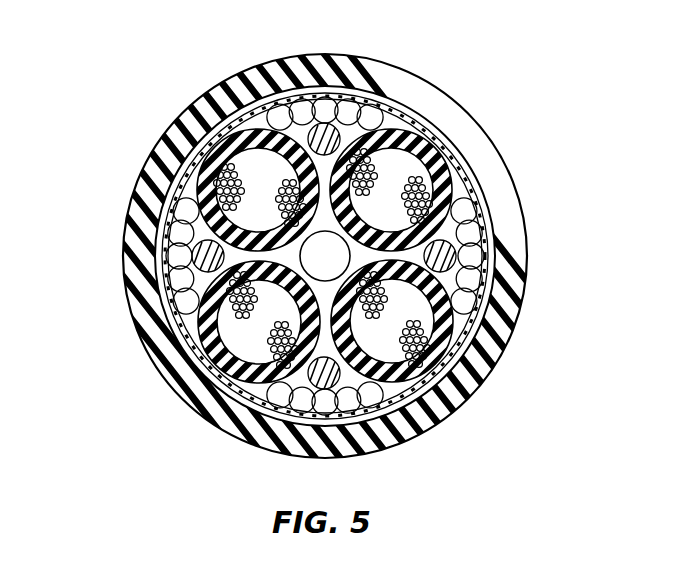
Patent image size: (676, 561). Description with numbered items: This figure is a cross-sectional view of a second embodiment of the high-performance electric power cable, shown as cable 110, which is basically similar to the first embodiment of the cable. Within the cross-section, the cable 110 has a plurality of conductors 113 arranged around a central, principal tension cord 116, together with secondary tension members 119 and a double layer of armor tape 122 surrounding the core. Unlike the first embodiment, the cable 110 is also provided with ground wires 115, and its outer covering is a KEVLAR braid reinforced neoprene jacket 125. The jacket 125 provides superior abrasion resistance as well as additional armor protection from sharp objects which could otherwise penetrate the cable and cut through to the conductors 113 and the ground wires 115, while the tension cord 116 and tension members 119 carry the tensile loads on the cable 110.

The cable 110 is at (131, 150).
The conductors 113 is at (447, 162).
The ground wires 115 is at (334, 124).
The central, principal tension cord 116 is at (412, 174).
The secondary tension members 119 is at (173, 234).
The double layer of armor tape 122 is at (492, 232).
The KEVLAR braid reinforced neoprene jacket 125 is at (436, 96).